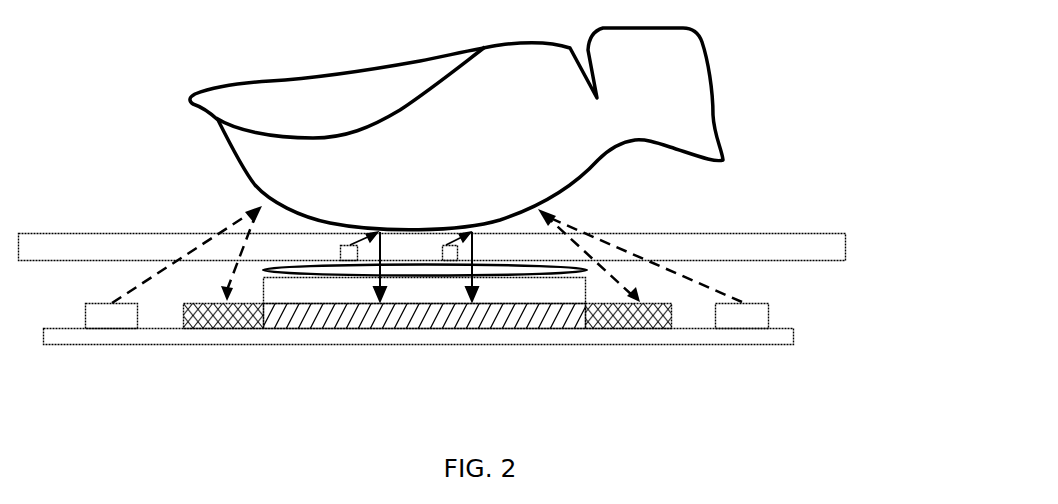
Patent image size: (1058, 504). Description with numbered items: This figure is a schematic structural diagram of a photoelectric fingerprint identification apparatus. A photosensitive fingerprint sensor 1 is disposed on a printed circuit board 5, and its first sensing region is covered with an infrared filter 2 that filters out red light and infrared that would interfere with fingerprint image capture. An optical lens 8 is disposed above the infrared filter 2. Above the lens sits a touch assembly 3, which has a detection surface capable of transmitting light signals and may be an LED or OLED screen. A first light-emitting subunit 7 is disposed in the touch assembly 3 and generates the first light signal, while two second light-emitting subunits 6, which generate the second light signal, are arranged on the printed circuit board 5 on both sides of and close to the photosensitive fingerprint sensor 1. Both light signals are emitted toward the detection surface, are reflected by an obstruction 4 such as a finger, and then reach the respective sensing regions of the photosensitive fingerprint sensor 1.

The photosensitive fingerprint sensor 1 is at (353, 312).
The infrared filter 2 is at (550, 300).
The touch assembly 3 is at (850, 247).
The obstruction 4 is at (722, 123).
The printed circuit board 5 is at (798, 337).
The second light-emitting subunit 6 is at (112, 312).
The first light-emitting subunit 7 is at (343, 258).
The optical lens 8 is at (287, 272).